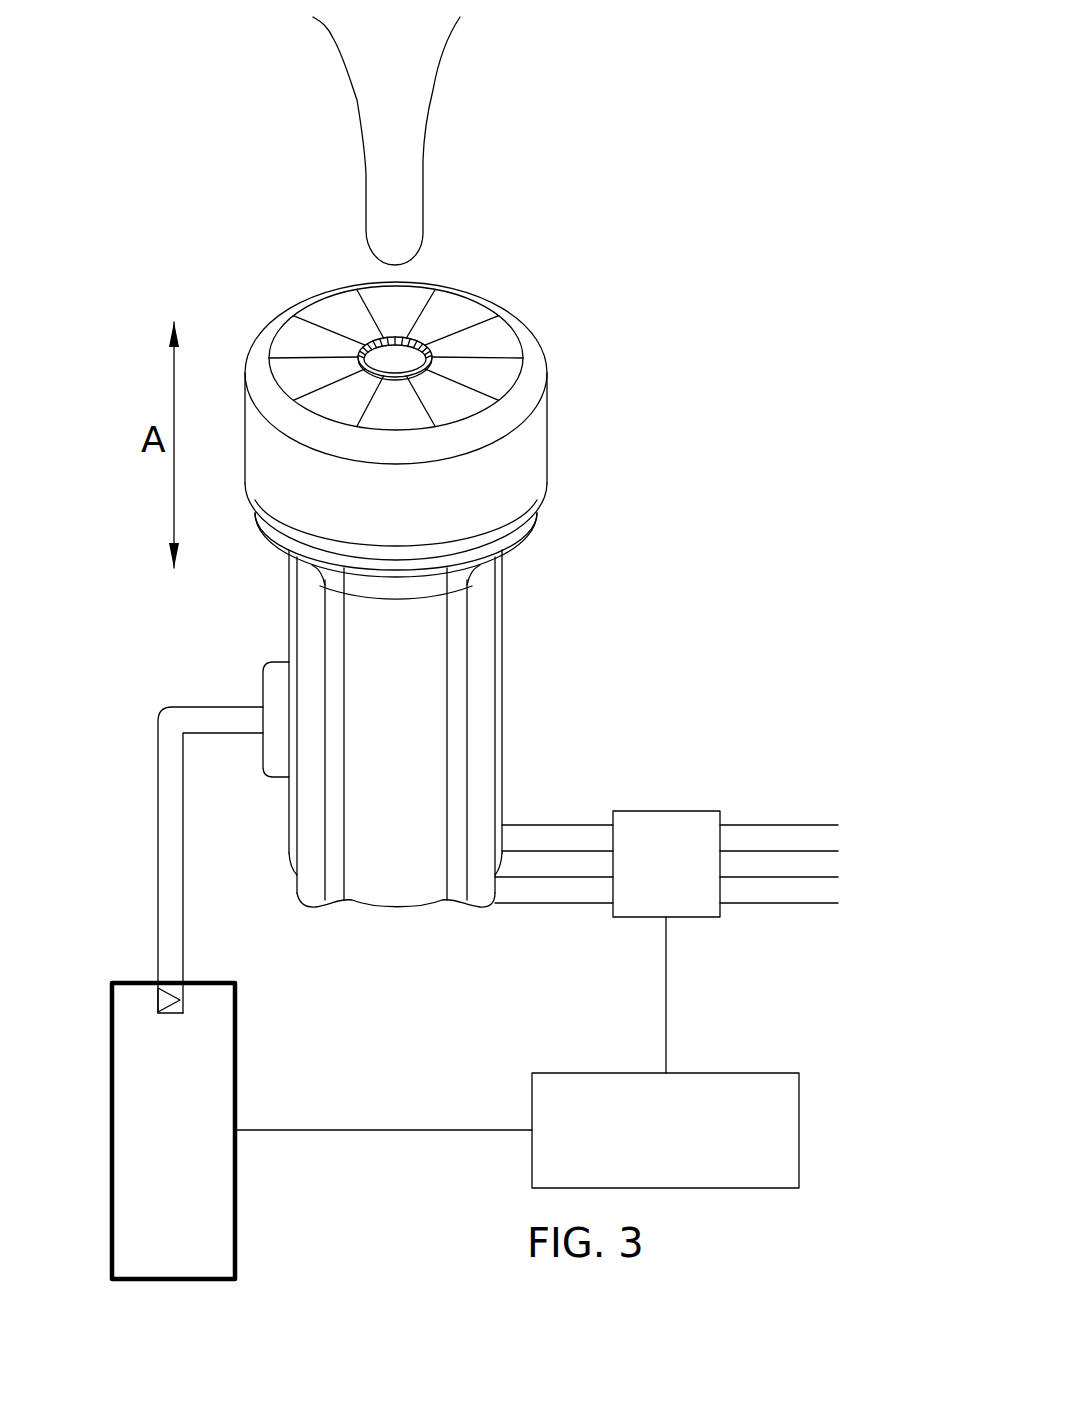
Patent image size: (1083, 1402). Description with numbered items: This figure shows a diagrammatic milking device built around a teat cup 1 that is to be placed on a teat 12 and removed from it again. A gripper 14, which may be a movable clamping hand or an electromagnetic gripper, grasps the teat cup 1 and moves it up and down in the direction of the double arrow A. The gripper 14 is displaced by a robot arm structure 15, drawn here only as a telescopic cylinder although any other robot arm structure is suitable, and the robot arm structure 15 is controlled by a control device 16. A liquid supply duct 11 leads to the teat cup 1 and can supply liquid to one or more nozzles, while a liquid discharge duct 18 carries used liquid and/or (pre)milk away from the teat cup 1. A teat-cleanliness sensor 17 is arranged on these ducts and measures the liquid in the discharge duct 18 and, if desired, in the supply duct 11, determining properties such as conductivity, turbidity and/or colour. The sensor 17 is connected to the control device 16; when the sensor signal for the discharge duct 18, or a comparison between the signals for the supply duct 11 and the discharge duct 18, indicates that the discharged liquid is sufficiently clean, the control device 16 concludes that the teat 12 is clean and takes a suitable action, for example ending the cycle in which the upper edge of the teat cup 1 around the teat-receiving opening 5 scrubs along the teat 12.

The teat cup 1 is at (538, 616).
The teat-receiving opening 5 is at (397, 362).
The liquid supply duct 11 is at (548, 839).
The teat 12 is at (406, 134).
The gripper 14 is at (170, 858).
The robot arm structure 15 is at (207, 1172).
The control device 16 is at (718, 1103).
The teat-cleanliness sensor 17 is at (658, 864).
The liquid discharge duct 18 is at (736, 893).